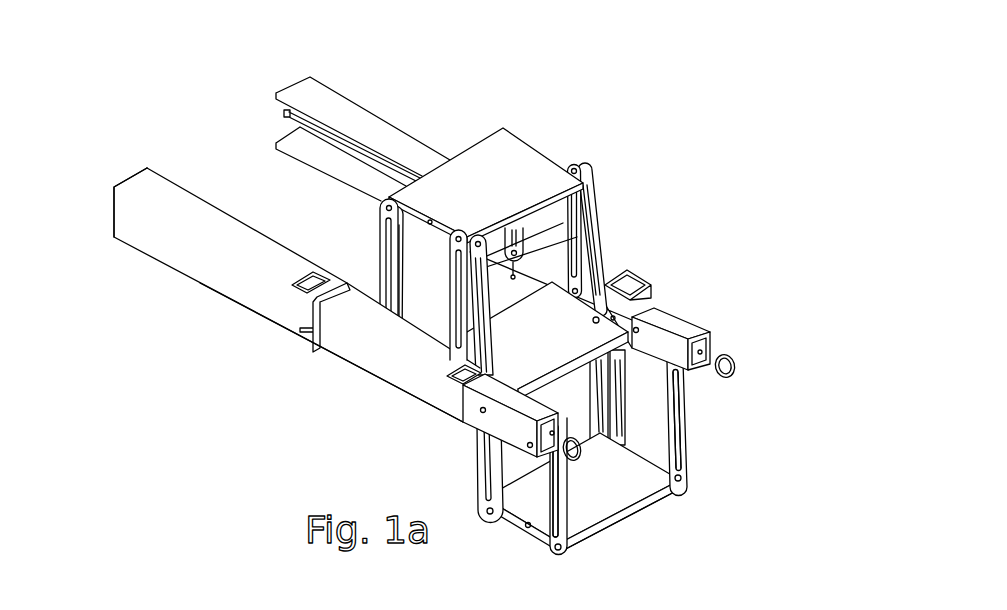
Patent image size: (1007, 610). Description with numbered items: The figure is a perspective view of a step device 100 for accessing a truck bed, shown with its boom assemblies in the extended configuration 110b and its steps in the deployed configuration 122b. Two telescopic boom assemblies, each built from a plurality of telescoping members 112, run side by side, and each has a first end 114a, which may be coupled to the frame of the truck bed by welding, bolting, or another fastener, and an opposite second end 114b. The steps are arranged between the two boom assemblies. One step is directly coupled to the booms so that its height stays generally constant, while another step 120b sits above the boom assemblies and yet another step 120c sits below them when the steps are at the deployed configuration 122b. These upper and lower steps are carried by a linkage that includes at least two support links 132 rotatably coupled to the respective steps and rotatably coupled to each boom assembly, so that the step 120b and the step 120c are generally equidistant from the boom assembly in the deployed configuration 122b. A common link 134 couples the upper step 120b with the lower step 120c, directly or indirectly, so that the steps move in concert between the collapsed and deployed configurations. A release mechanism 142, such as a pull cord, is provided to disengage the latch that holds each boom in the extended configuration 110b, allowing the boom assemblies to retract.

The step device 100 is at (660, 73).
The extended configuration 110b is at (348, 388).
The telescoping member 112 is at (343, 328).
The first end 114a is at (115, 260).
The second end 114b is at (726, 317).
The step 120b is at (503, 128).
The step 120c is at (640, 487).
The deployed configuration 122b is at (589, 561).
The support link 132 is at (625, 440).
The common link 134 is at (613, 249).
The release mechanism 142 is at (749, 375).